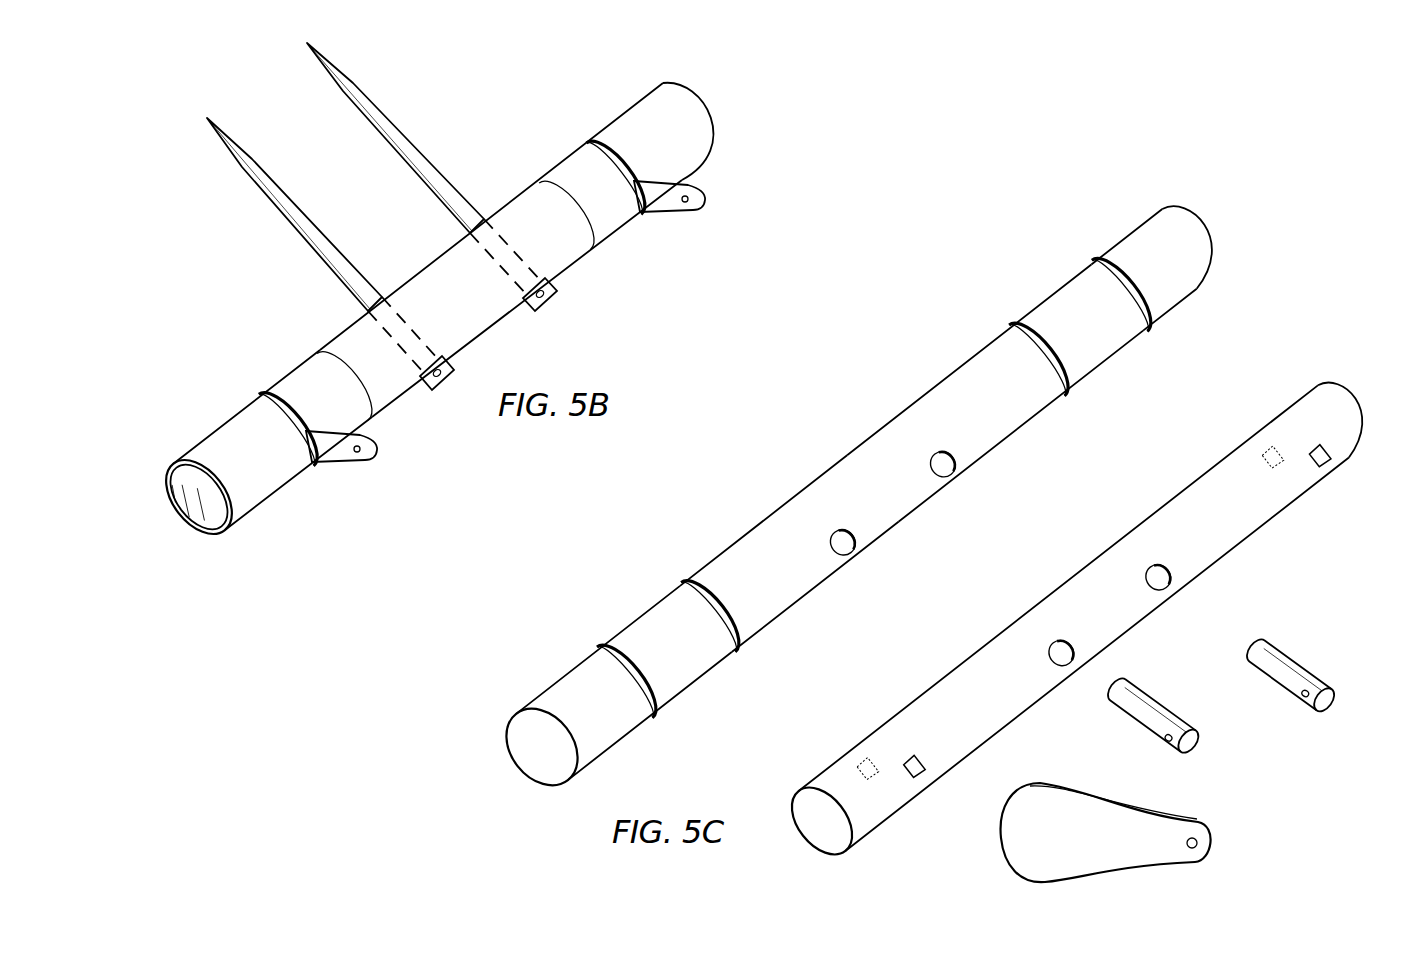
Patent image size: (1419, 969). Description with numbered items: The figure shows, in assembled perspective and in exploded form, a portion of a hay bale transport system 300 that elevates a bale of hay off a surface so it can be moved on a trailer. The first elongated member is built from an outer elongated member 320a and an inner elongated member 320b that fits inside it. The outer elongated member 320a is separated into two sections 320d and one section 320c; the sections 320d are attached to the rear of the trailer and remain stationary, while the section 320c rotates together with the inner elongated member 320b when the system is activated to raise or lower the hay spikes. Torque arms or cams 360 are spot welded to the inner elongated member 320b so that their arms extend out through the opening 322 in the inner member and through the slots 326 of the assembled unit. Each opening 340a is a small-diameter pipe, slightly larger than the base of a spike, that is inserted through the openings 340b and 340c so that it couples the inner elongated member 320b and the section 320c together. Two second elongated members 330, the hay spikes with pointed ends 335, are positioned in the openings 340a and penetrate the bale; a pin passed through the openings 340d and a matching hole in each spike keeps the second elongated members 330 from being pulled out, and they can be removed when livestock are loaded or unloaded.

In FIG. 5B, the hay bale transport system 300 is at (760, 121).
In FIG. 5C, the hay bale transport system 300 is at (1335, 338).
In FIG. 5B, the outer elongated member 320a is at (286, 498).
In FIG. 5C, the outer elongated member 320a is at (1018, 486).
In FIG. 5C, the inner elongated member 320b is at (897, 820).
In FIG. 5C, the rotatable section of outer elongated member 320c is at (916, 522).
In FIG. 5C, the stationary sections of outer elongated member 320d is at (616, 758).
In FIG. 5C, the opening 322 is at (926, 776).
In FIG. 5B, the slots 326 is at (276, 390).
In FIG. 5C, the slots 326 is at (603, 645).
In FIG. 5B, the second elongated member 330 is at (279, 206).
In FIG. 5B, the pointed end 335 is at (207, 127).
In FIG. 5C, the opening 340a is at (1141, 686).
In FIG. 5C, the opening 340b is at (1166, 586).
In FIG. 5C, the opening 340c is at (951, 470).
In FIG. 5B, the opening 340d is at (548, 312).
In FIG. 5C, the opening 340d is at (1177, 723).
In FIG. 5B, the torque arm or cam 360 is at (368, 461).
In FIG. 5C, the torque arm or cam 360 is at (1106, 806).